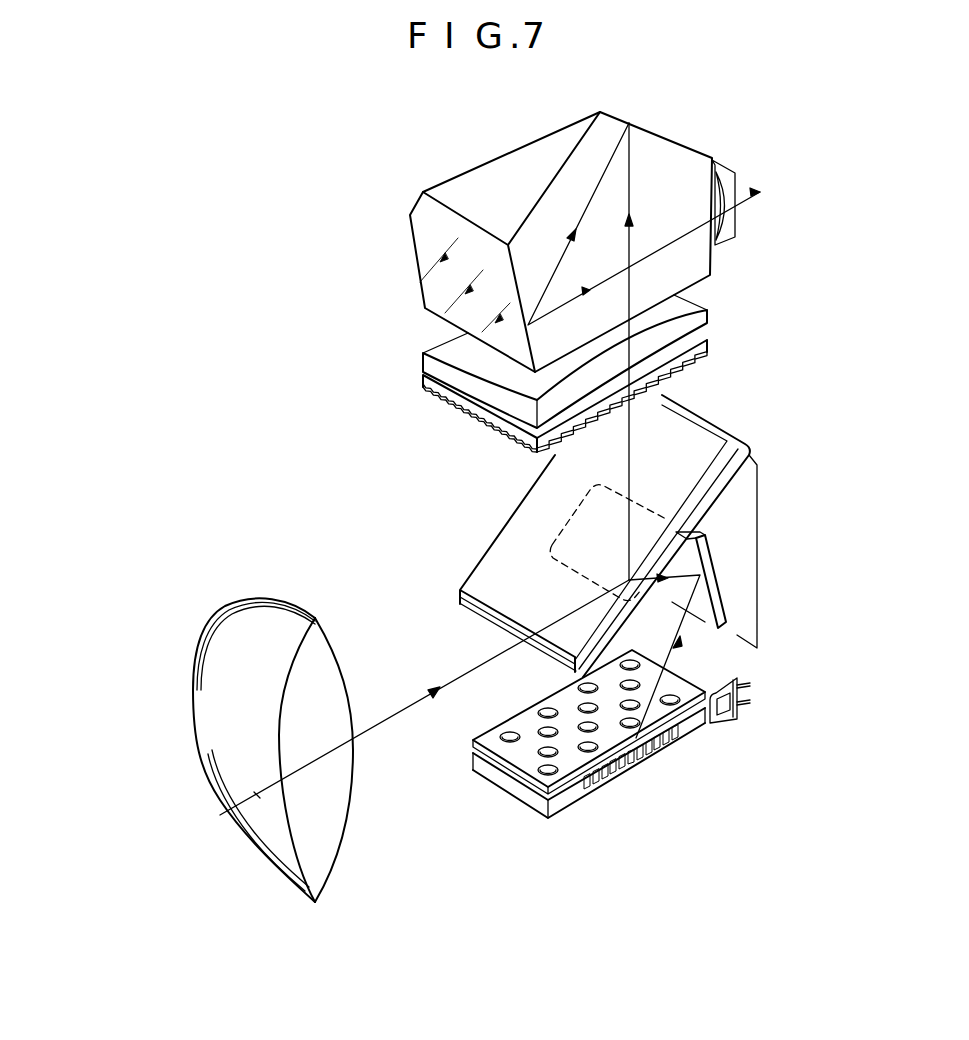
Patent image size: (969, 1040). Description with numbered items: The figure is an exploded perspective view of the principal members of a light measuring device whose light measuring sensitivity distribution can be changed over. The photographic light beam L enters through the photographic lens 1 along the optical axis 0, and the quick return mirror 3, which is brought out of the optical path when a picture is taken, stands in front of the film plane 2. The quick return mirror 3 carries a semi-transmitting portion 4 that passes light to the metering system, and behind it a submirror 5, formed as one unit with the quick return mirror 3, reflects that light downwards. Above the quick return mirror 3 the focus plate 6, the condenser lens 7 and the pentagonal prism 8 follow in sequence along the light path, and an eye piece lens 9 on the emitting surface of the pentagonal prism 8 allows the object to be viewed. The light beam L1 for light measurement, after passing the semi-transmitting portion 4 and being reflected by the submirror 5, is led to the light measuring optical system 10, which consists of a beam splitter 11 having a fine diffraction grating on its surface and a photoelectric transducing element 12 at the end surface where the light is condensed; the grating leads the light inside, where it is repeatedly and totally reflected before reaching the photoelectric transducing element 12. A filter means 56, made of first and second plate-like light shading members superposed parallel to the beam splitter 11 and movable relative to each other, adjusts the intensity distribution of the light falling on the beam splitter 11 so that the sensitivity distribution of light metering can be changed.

The photographic lens 1 is at (262, 605).
The optical axis 0 is at (257, 795).
The photographic light beam L is at (402, 710).
The film plane 2 is at (760, 487).
The quick return mirror 3 is at (478, 572).
The semi-transmitting portion 4 is at (558, 535).
The submirror 5 is at (705, 563).
The light beam for light measurement L1 is at (687, 623).
The focus plate 6 is at (708, 348).
The condenser lens 7 is at (705, 320).
The pentagonal prism 8 is at (665, 143).
The eye piece lens 9 is at (735, 185).
The light measuring optical system 10 is at (693, 779).
The beam splitter 11 is at (705, 725).
The photoelectric transducing element 12 is at (738, 715).
The filter means 56 is at (522, 770).